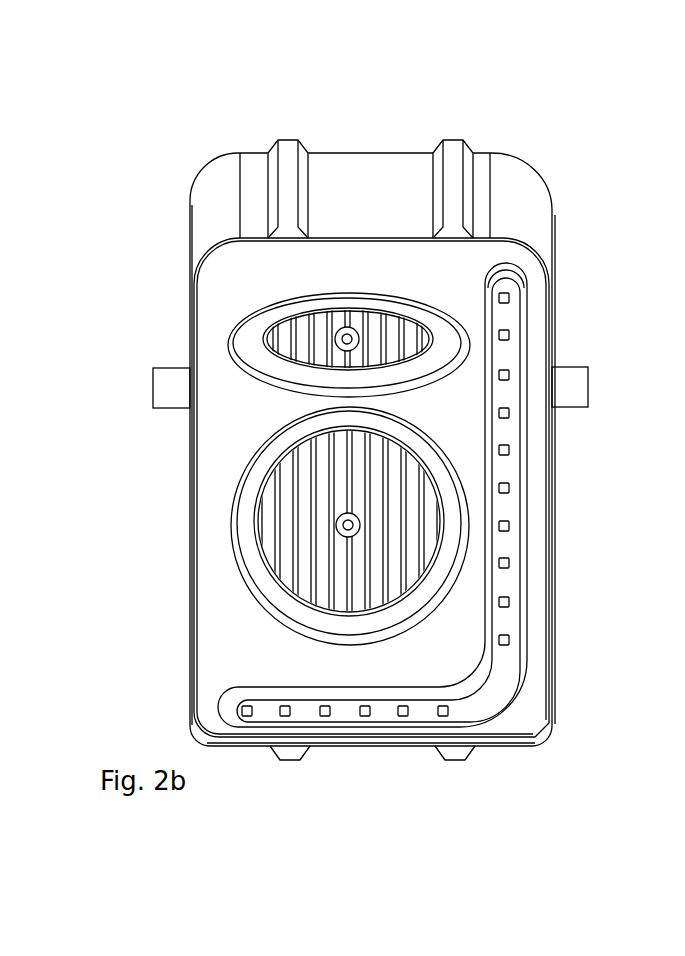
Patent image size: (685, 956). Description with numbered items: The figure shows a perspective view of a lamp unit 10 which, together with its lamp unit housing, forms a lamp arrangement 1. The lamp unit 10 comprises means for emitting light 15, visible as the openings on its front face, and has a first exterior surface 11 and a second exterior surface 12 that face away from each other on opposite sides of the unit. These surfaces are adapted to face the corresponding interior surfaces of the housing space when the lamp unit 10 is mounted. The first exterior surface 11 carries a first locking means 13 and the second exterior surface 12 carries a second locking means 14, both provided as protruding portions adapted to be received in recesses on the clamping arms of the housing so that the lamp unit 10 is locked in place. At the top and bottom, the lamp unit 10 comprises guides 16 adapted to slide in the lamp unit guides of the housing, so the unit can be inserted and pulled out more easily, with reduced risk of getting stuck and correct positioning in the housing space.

The lamp arrangement 1 is at (170, 157).
The lamp unit 10 is at (206, 120).
The first exterior surface 11 is at (581, 475).
The second exterior surface 12 is at (175, 455).
The first locking means 13 is at (597, 389).
The second locking means 14 is at (148, 384).
The means for emitting light 15 is at (262, 385).
The guides 16 is at (440, 141).